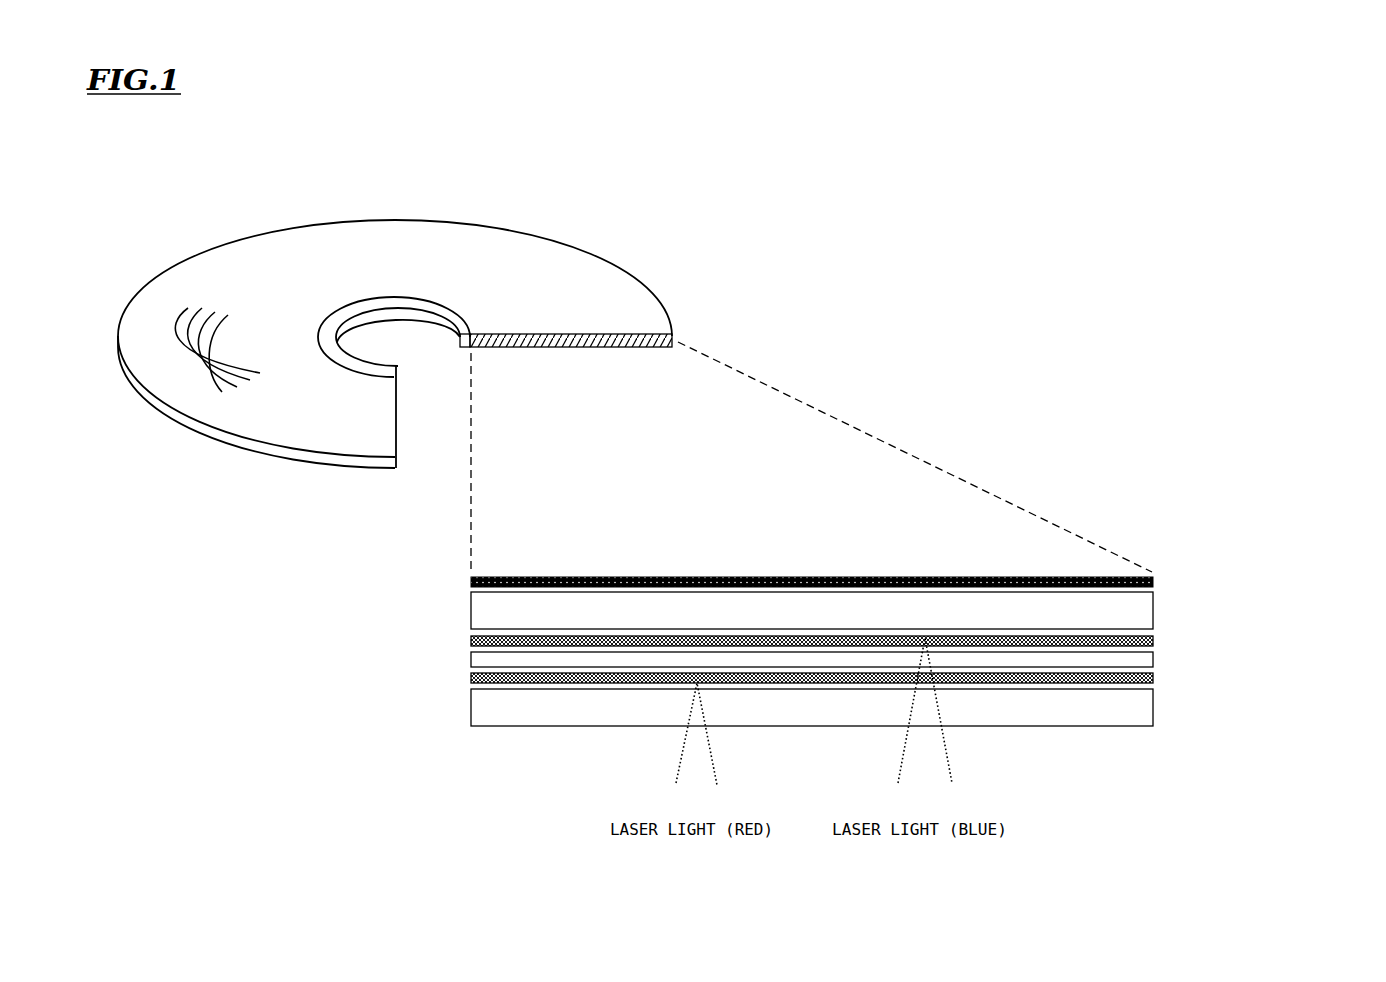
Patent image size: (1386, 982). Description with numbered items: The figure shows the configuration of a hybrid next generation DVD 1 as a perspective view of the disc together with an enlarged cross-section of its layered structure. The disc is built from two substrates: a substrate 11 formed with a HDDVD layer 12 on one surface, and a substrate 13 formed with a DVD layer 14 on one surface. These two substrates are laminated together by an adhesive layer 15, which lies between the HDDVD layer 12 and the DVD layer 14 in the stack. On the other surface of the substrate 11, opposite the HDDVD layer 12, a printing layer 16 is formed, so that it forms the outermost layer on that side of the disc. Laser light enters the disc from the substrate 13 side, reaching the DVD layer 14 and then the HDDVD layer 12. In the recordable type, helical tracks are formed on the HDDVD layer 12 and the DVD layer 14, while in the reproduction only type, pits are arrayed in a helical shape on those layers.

The hybrid next generation DVD 1 is at (582, 283).
The substrate 11 is at (1155, 608).
The HDDVD layer 12 is at (469, 641).
The substrate 13 is at (1155, 707).
The DVD layer 14 is at (469, 678).
The adhesive layer 15 is at (1155, 658).
The printing layer 16 is at (937, 537).